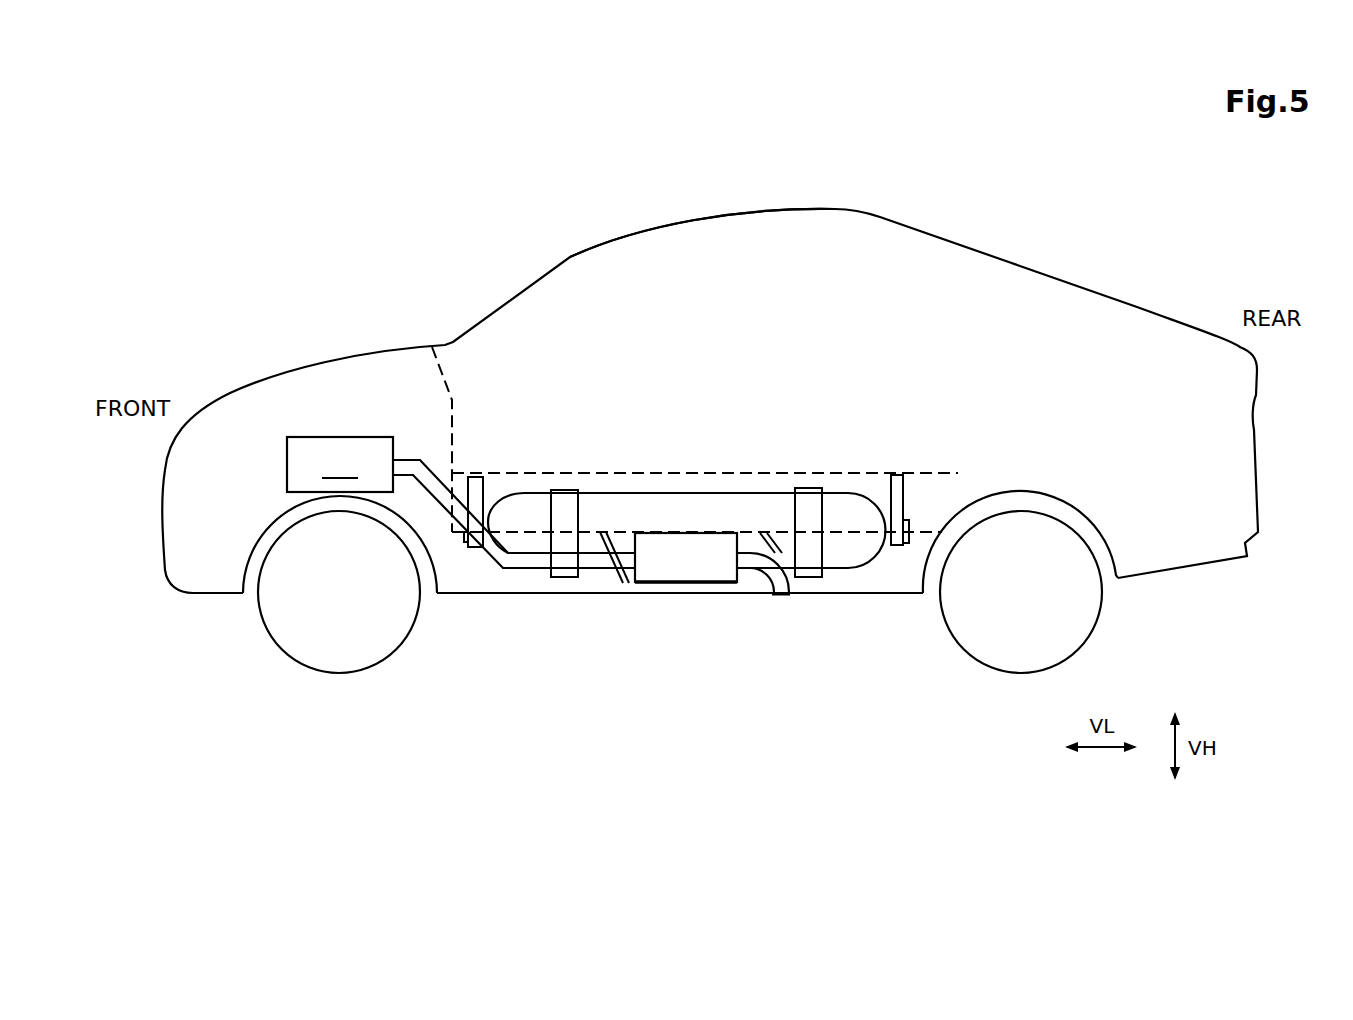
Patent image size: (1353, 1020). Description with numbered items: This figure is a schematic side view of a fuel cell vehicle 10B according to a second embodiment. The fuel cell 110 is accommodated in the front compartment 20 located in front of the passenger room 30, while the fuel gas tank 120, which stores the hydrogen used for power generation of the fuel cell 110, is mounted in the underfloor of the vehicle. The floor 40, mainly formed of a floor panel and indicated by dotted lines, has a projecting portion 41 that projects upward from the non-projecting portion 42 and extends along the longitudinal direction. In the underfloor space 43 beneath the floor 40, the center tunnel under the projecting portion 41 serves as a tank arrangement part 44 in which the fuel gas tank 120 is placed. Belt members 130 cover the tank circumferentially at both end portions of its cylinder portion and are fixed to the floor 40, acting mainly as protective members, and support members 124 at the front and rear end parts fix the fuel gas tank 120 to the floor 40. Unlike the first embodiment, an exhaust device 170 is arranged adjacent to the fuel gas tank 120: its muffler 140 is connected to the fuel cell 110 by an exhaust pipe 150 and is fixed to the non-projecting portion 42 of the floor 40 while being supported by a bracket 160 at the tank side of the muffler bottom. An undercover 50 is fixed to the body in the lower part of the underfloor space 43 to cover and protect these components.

The fuel cell vehicle 10B is at (403, 234).
The front compartment 20 is at (365, 365).
The passenger room 30 is at (597, 265).
The floor 40 is at (739, 461).
The projecting portion 41 is at (832, 472).
The non-projecting portion 42 is at (932, 528).
The underfloor space 43 is at (483, 594).
The tank arrangement part 44 is at (776, 484).
The undercover 50 is at (873, 595).
The fuel cell 110 is at (340, 464).
The fuel gas tank 120 is at (720, 493).
The support member 124 is at (478, 478).
The belt member 130 is at (553, 490).
The muffler 140 is at (684, 584).
The exhaust pipe 150 is at (524, 571).
The bracket 160 is at (628, 584).
The exhaust device 170 is at (510, 637).